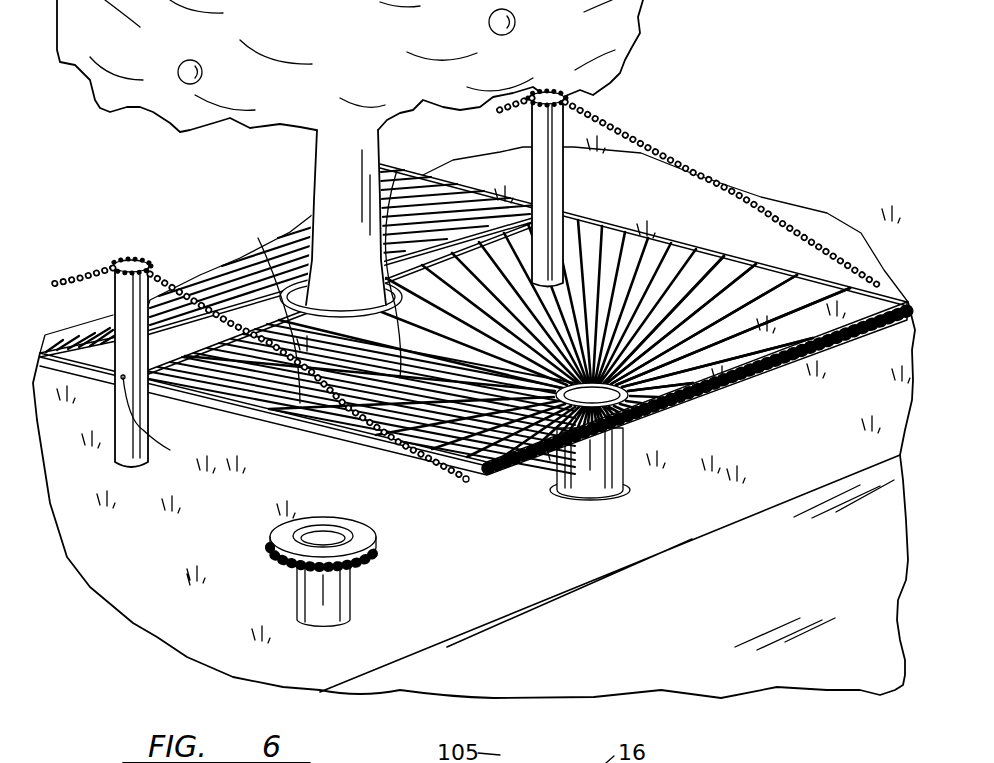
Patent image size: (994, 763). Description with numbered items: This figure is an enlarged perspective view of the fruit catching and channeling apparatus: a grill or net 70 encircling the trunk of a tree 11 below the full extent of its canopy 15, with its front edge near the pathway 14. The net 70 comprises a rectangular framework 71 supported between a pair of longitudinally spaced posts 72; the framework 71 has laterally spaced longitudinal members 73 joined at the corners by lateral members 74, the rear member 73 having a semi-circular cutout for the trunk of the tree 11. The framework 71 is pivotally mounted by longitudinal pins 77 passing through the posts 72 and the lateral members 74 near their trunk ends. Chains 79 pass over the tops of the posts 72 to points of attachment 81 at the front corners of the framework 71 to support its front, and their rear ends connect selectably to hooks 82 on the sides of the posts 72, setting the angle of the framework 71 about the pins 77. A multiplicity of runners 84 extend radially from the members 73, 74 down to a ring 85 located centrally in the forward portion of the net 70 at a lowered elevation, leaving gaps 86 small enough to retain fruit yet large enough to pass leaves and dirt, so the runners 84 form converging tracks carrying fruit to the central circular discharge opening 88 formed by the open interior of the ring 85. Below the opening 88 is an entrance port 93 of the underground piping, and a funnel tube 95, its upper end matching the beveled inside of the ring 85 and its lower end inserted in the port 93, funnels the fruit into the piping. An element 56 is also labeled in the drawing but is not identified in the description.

The tree 11 is at (316, 188).
The pathway 14 is at (735, 610).
The canopy 15 is at (381, 46).
The tree root zone boundary 56 is at (397, 170).
The net 70 is at (714, 162).
The rectangular framework 71 is at (818, 347).
The post 72 is at (553, 165).
The longitudinal member 73 is at (230, 335).
The lateral member 74 is at (767, 300).
The longitudinal pin 77 is at (157, 422).
The chain 79 is at (90, 272).
The point of attachment 81 is at (463, 484).
The hook 82 is at (152, 268).
The runner 84 is at (773, 333).
The ring 85 is at (630, 407).
The gap 86 is at (811, 280).
The central circular discharge opening 88 is at (690, 378).
The entrance port 93 is at (624, 497).
The funnel tube 95 is at (305, 588).